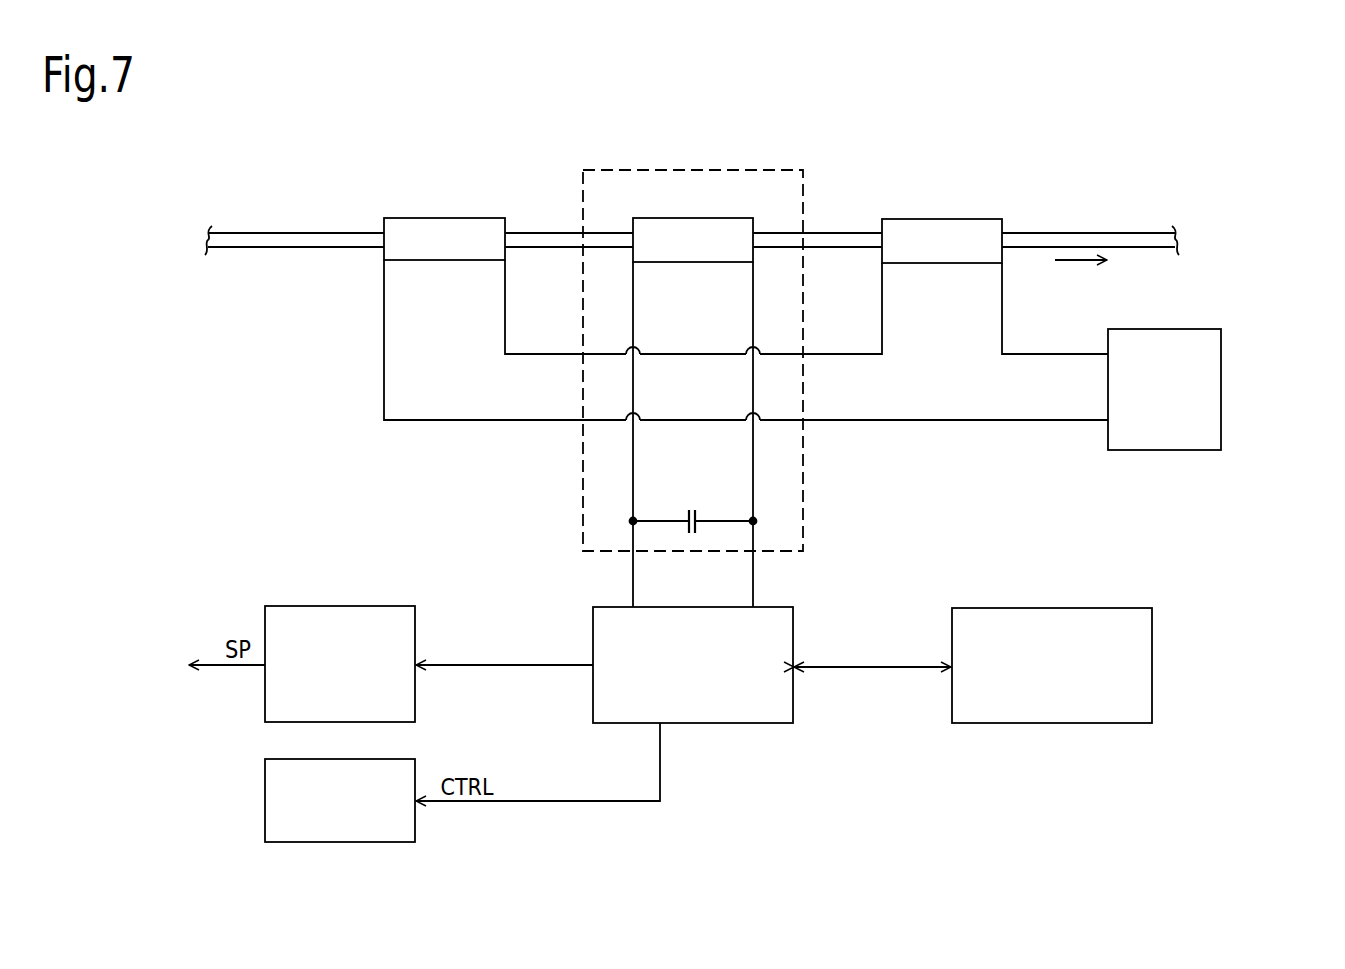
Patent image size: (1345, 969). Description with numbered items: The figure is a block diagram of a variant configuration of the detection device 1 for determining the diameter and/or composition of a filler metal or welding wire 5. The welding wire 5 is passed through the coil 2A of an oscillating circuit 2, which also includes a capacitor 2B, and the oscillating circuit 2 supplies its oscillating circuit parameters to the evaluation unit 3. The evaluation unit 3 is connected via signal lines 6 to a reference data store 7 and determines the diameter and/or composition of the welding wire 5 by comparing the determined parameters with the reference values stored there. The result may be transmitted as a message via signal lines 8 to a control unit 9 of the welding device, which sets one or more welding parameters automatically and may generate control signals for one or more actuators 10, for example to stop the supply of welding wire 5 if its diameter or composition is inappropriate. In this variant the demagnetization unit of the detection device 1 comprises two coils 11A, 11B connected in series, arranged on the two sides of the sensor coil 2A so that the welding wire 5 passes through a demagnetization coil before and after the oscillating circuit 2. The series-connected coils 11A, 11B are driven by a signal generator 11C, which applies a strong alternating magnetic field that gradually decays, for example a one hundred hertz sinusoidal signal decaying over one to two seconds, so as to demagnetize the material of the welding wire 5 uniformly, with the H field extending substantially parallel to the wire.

The detection device 1 is at (1251, 202).
The oscillating circuit 2 is at (693, 330).
The coil of the oscillating circuit 2A is at (665, 218).
The capacitor of the oscillating circuit 2B is at (695, 510).
The evaluation unit 3 is at (693, 665).
The welding wire 5 is at (263, 240).
The signal lines 6 is at (873, 663).
The reference data store 7 is at (1052, 665).
The signal lines 8 is at (505, 662).
The control unit 9 is at (340, 664).
The actuators 10 is at (340, 800).
The demagnetization coil 11A is at (444, 240).
The demagnetization coil 11B is at (942, 241).
The signal generator 11C is at (1165, 414).